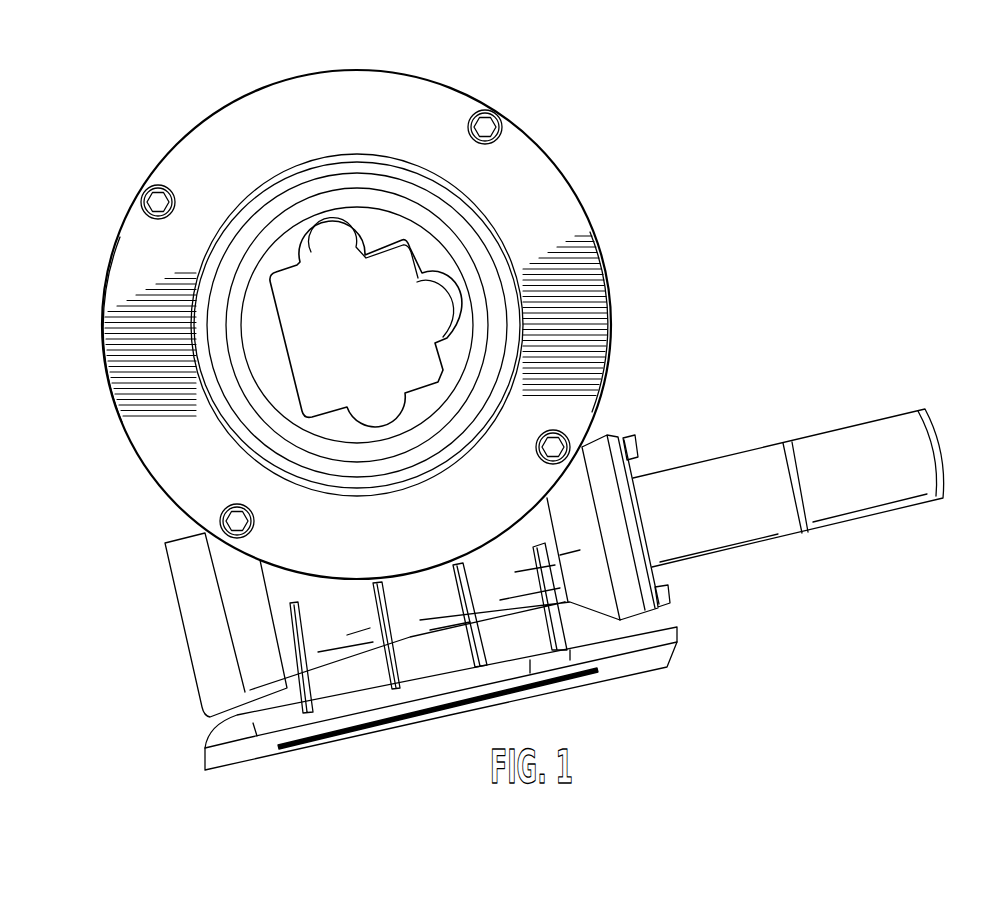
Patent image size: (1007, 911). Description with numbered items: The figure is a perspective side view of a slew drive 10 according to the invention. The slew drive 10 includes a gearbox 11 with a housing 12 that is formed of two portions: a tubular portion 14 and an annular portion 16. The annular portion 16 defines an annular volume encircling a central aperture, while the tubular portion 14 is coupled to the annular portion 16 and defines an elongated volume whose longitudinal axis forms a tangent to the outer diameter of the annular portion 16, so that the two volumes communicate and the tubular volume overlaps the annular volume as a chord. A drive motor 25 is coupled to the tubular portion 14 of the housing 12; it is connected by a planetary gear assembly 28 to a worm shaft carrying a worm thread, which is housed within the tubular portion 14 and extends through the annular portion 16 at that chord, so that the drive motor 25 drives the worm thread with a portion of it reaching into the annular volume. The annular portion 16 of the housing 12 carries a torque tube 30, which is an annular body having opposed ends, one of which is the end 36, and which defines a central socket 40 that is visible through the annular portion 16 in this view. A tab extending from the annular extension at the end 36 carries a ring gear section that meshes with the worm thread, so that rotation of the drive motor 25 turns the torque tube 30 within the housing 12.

The slew drive 10 is at (608, 160).
The gearbox 11 is at (620, 290).
The housing 12 is at (617, 427).
The tubular portion 14 is at (247, 603).
The annular portion 16 is at (105, 256).
The drive motor 25 is at (888, 433).
The planetary gear assembly 28 is at (760, 528).
The torque tube 30 is at (288, 255).
The end 36 is at (458, 213).
The central socket 40 is at (358, 297).